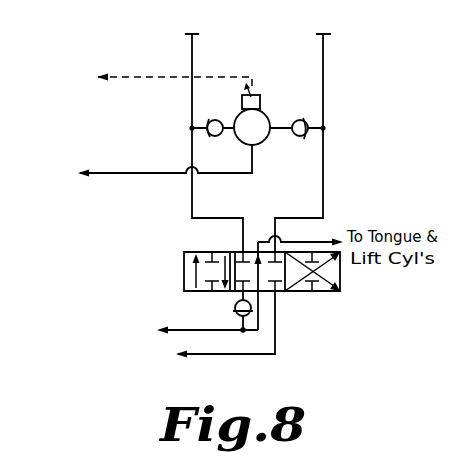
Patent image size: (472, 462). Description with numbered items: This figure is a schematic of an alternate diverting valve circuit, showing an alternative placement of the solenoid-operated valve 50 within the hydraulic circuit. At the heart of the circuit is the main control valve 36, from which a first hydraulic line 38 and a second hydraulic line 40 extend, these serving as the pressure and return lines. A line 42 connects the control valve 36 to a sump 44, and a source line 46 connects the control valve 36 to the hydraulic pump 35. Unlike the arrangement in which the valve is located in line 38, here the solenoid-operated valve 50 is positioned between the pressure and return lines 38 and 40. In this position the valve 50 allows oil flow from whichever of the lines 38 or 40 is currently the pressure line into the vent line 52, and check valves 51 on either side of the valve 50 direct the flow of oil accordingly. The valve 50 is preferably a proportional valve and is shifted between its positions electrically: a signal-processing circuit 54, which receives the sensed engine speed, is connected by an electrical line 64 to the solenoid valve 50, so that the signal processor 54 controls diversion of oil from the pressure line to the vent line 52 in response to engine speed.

The main control valve 36 is at (312, 291).
The first hydraulic line 38 is at (192, 187).
The second hydraulic line 40 is at (323, 95).
The line 42 is at (235, 356).
The source line 46 is at (176, 328).
The solenoid-operated valve 50 is at (263, 115).
The check valves 51 is at (207, 134).
The vent line 52 is at (233, 174).
The electrical line 64 is at (211, 75).
The signal-processing circuit 54 is at (105, 69).
The sump 44 is at (101, 272).
The hydraulic pump 35 is at (99, 312).